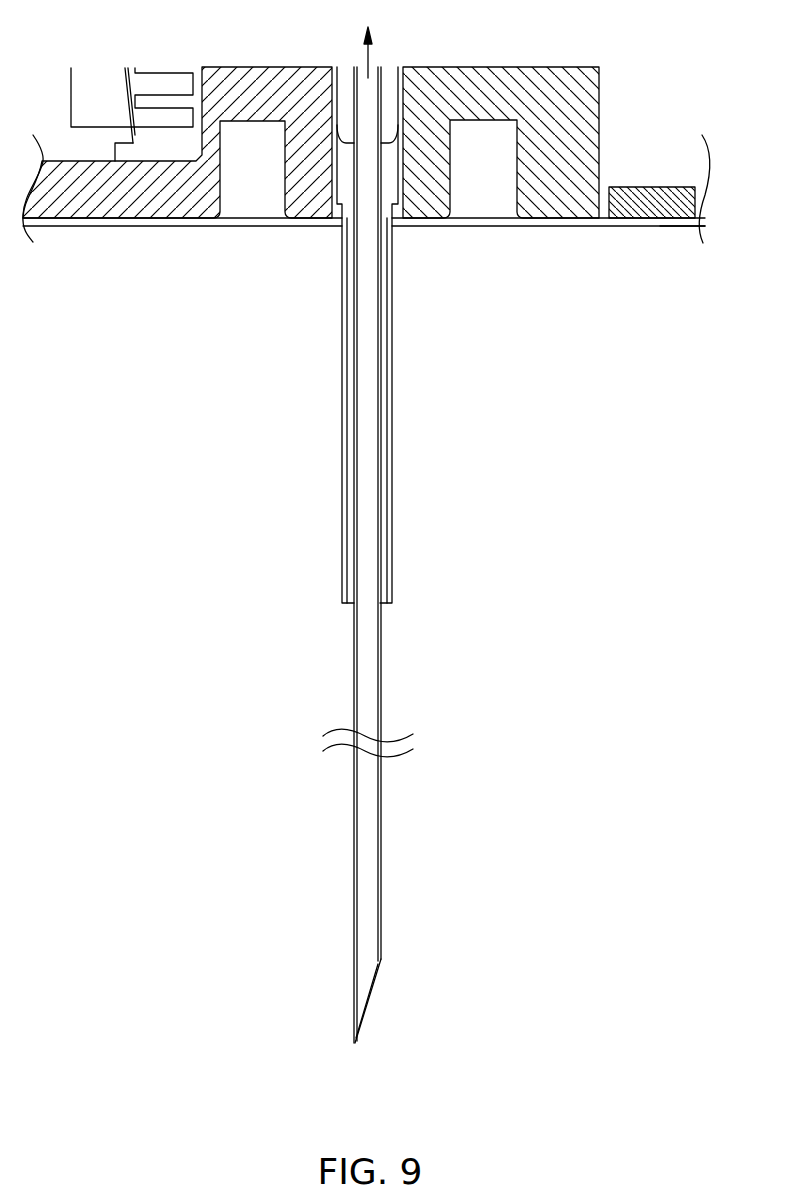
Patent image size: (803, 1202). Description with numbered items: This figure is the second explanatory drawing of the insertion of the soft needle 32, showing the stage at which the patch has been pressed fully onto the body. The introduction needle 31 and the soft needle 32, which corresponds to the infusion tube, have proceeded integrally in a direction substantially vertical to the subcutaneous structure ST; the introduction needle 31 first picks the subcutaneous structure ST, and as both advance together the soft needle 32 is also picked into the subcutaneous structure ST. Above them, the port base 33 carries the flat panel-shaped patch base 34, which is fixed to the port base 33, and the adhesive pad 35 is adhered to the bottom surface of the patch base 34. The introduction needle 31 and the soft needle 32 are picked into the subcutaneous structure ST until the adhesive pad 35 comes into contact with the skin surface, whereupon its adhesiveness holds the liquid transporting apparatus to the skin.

The introduction needle 31 is at (370, 662).
The soft needle 32 is at (388, 387).
The port base 33 is at (598, 87).
The patch base 34 is at (642, 187).
The adhesive pad 35 is at (53, 221).
The subcutaneous structure ST is at (670, 243).